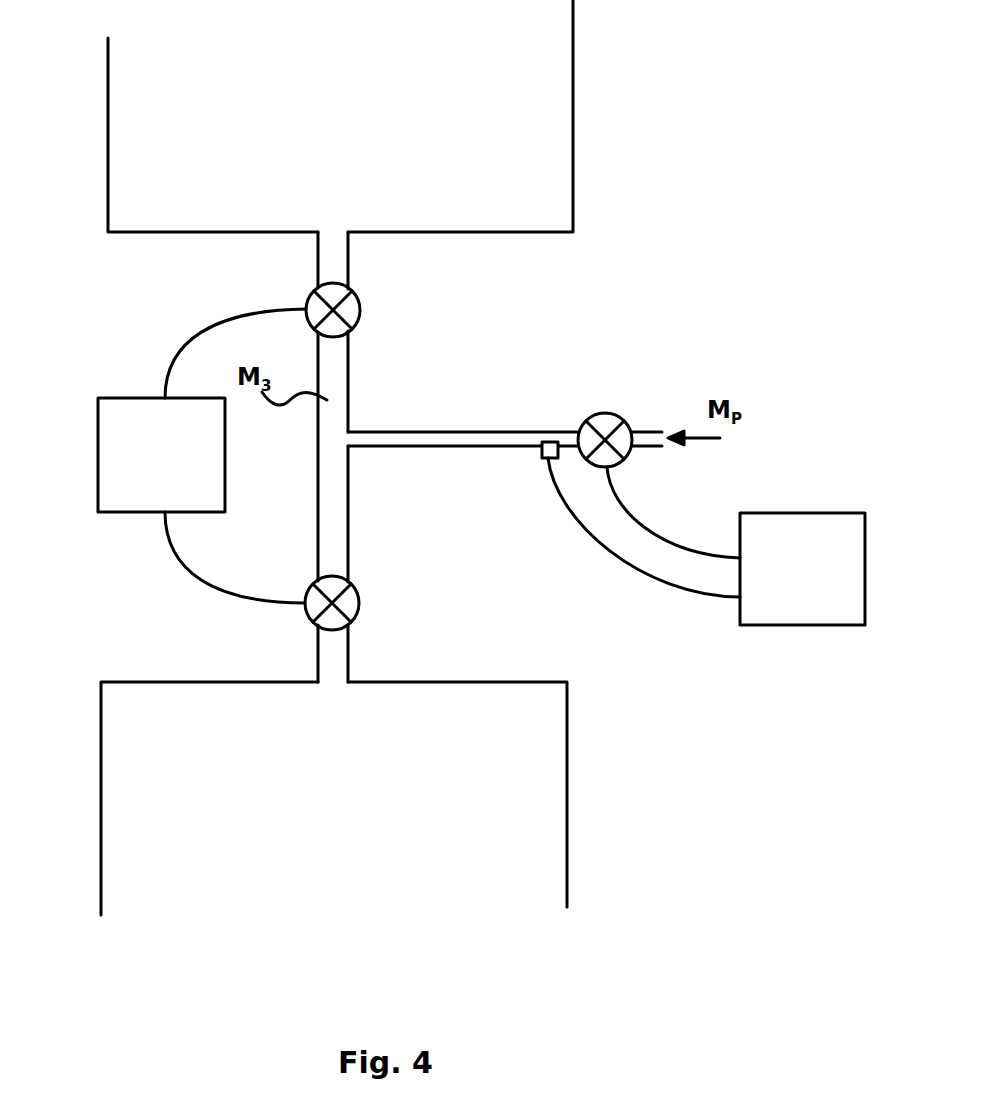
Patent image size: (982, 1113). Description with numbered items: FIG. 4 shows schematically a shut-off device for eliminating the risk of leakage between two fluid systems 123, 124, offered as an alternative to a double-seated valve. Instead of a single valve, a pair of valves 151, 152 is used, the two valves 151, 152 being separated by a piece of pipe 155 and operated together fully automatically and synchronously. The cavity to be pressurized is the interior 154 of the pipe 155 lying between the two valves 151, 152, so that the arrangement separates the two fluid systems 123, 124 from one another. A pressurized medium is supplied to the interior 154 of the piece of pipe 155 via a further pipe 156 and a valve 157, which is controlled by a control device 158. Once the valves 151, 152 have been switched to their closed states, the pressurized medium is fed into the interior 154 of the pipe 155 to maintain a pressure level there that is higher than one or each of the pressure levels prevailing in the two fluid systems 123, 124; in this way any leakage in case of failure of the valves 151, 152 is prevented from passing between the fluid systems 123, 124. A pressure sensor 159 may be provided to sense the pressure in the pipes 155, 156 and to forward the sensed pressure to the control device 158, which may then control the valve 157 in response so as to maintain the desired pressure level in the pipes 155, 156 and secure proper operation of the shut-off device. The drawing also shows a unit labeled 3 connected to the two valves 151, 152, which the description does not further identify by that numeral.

The control unit 3 is at (97, 445).
The fluid system 123 is at (553, 90).
The fluid system 124 is at (548, 767).
The valve 151 is at (360, 308).
The valve 152 is at (360, 600).
The interior 154 is at (338, 487).
The pipe 155 is at (350, 518).
The pipe 156 is at (448, 432).
The valve 157 is at (607, 412).
The control device 158 is at (795, 626).
The pressure sensor 159 is at (543, 454).